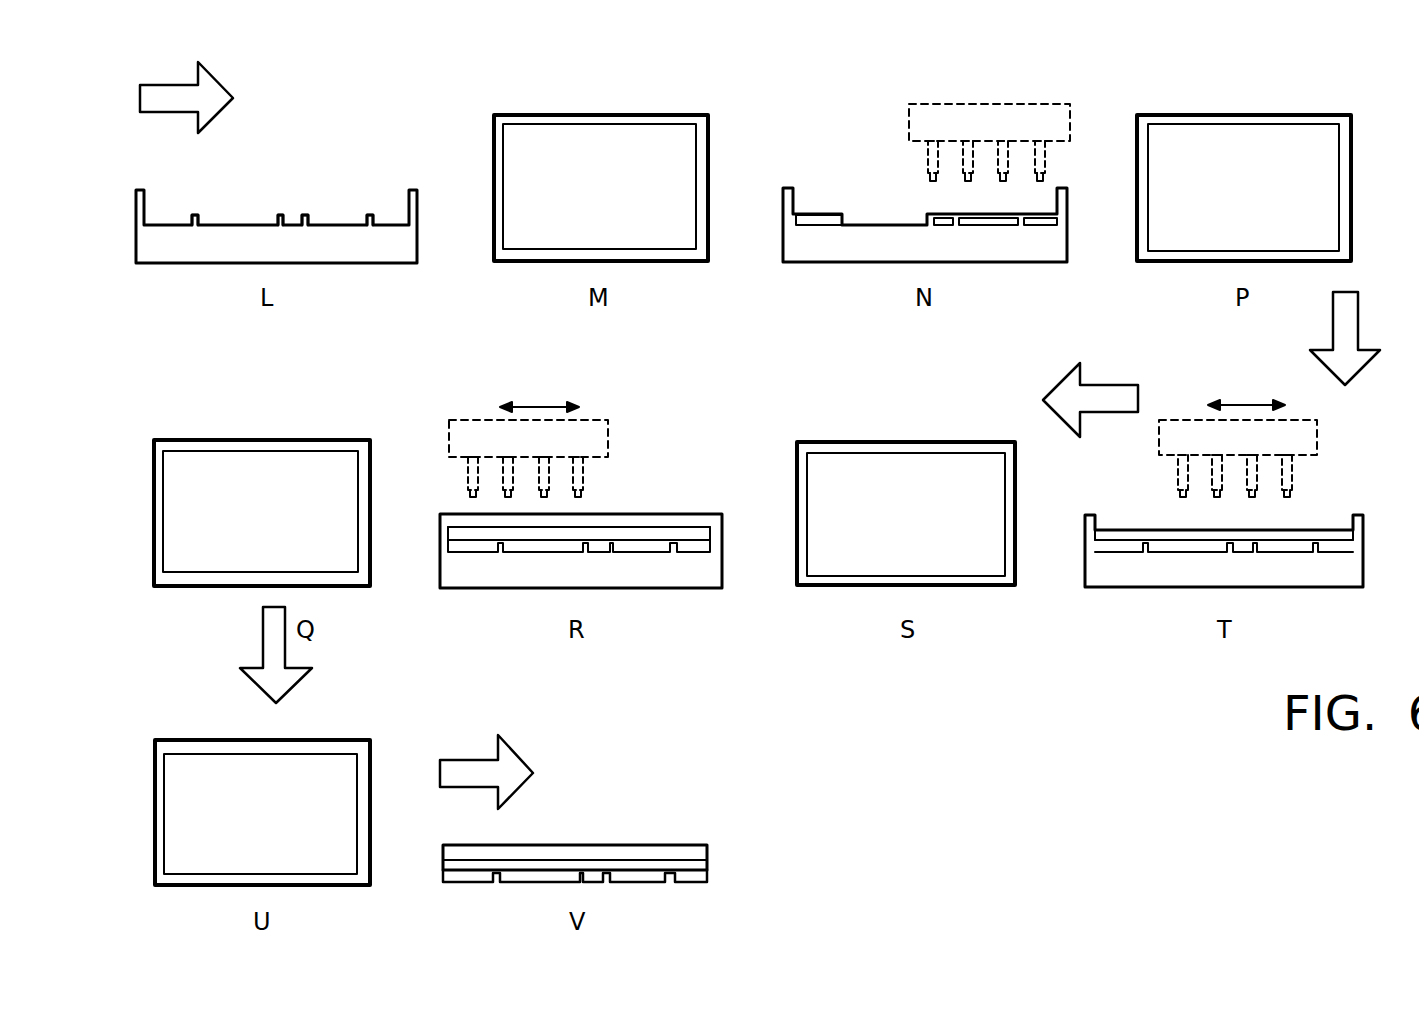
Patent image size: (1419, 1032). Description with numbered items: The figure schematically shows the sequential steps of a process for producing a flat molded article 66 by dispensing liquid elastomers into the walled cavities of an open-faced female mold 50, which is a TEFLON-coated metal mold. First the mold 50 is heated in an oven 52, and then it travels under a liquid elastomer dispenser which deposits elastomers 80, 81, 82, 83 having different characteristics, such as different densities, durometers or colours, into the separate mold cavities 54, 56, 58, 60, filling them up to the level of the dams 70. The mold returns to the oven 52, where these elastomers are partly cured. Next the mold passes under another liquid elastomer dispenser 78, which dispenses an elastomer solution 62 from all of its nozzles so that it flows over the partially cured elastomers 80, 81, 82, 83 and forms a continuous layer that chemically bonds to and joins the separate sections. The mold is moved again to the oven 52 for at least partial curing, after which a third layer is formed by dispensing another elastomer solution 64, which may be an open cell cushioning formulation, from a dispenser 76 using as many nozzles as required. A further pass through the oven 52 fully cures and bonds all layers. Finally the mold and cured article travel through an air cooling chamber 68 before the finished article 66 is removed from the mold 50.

The female mold 50 is at (213, 253).
The dams 70 is at (369, 216).
The oven 52 is at (562, 258).
The mold cavity 54 is at (810, 220).
The mold cavity 56 is at (945, 222).
The mold cavity 58 is at (993, 220).
The mold cavity 60 is at (1043, 220).
The elastomer 80 is at (1047, 172).
The elastomer 81 is at (1012, 160).
The elastomer 82 is at (958, 158).
The elastomer 83 is at (925, 172).
The dispenser 76 is at (465, 425).
The elastomer solution 64 is at (612, 520).
The liquid elastomer dispenser 78 is at (1172, 420).
The elastomer solution 62 is at (1157, 535).
The air cooling chamber 68 is at (200, 882).
The flat molded article 66 is at (523, 877).